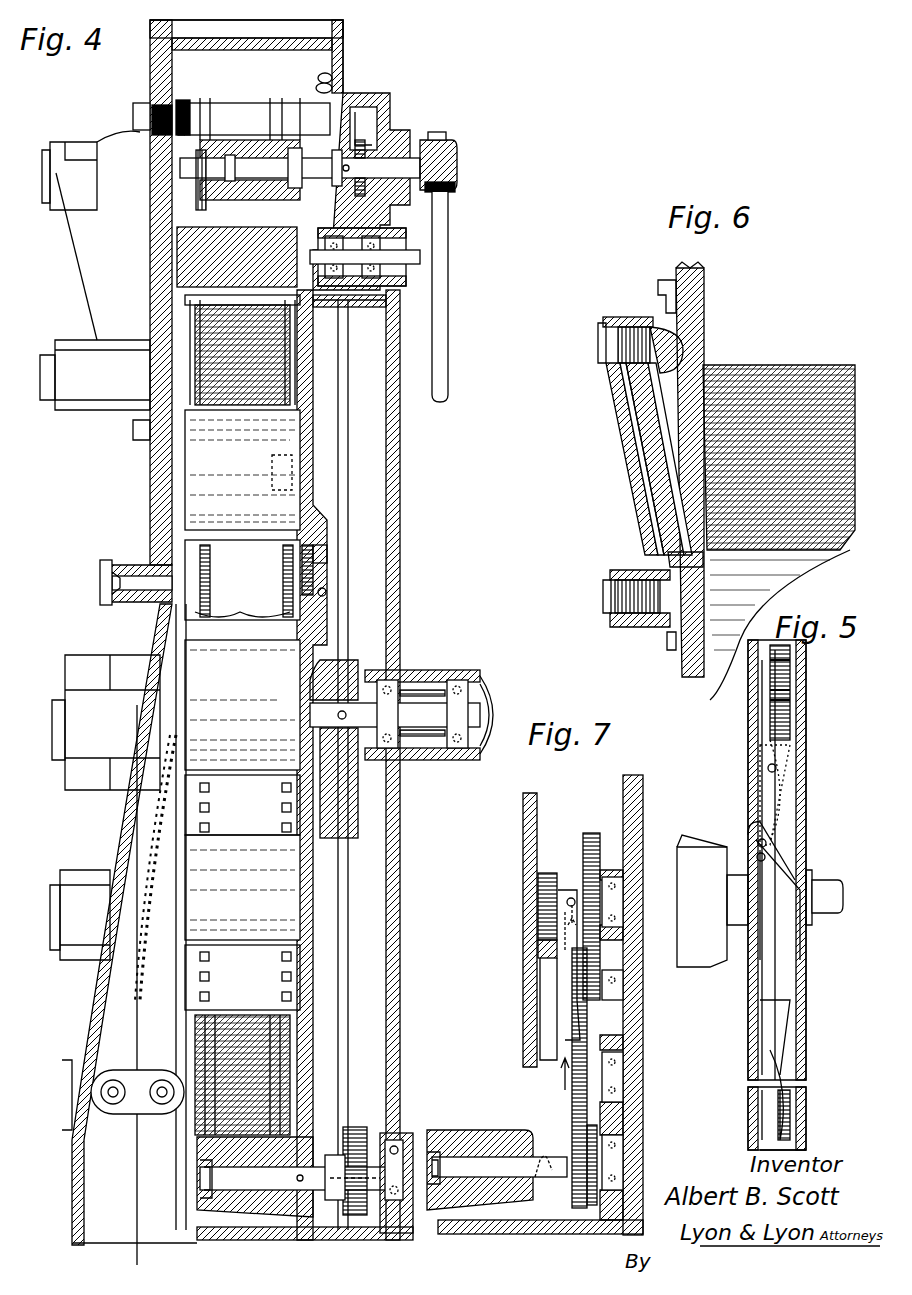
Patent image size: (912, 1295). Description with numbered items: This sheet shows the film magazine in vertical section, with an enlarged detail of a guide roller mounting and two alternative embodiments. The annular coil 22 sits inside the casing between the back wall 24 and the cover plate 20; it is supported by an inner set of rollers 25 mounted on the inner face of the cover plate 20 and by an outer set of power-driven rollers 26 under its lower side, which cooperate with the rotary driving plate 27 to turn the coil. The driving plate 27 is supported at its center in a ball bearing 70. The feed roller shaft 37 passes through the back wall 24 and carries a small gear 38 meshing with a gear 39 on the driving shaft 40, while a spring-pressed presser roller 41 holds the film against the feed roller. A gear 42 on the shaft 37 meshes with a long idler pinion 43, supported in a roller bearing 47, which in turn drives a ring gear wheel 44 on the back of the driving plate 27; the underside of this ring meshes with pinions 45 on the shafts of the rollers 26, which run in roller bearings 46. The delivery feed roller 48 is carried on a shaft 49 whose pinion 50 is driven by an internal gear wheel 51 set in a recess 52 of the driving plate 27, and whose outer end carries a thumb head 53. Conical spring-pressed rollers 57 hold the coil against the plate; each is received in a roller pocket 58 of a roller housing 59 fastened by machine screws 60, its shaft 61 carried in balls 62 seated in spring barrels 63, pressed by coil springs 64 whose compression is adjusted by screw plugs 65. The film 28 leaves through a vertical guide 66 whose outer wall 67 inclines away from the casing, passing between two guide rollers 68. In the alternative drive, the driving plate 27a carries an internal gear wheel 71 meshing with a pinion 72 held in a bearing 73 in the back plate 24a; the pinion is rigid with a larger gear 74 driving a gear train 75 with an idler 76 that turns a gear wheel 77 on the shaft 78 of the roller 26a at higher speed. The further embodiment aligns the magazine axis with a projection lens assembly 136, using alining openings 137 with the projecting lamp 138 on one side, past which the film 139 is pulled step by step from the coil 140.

In FIG. 4, the cover plate 20 is at (246, 292).
In FIG. 6, the cover plate 20 is at (690, 292).
In FIG. 4, the coil 22 is at (208, 340).
In FIG. 6, the coil 22 is at (805, 372).
In FIG. 4, the back wall 24 is at (402, 550).
In FIG. 7, the back plate 24a is at (632, 794).
In FIG. 4, the rollers 25 is at (285, 432).
In FIG. 4, the rollers 26 is at (252, 1195).
In FIG. 7, the roller 26a is at (470, 1138).
In FIG. 4, the driving plate 27 is at (325, 884).
In FIG. 7, the driving plate 27a is at (538, 928).
In FIG. 4, the film 28 is at (137, 975).
In FIG. 4, the shaft 37 is at (213, 173).
In FIG. 4, the pinion or small gear 38 is at (457, 150).
In FIG. 4, the gear 39 is at (456, 188).
In FIG. 4, the driving shaft 40 is at (448, 273).
In FIG. 4, the presser roller 41 is at (246, 101).
In FIG. 4, the gear 42 is at (368, 120).
In FIG. 4, the long pinion 43 is at (370, 235).
In FIG. 4, the gear wheel 44 is at (350, 313).
In FIG. 4, the pinions 45 is at (355, 1215).
In FIG. 4, the roller bearings 46 is at (398, 1150).
In FIG. 4, the roller bearing 47 is at (332, 1190).
In FIG. 4, the delivery feed roller 48 is at (255, 602).
In FIG. 4, the shaft 49 is at (148, 575).
In FIG. 4, the pinion 50 is at (315, 572).
In FIG. 4, the internal gear wheel 51 is at (328, 548).
In FIG. 4, the recess 52 is at (326, 594).
In FIG. 4, the thumb head 53 is at (104, 578).
In FIG. 6, the spring pressed rollers 57 is at (644, 414).
In FIG. 6, the roller pocket 58 is at (638, 440).
In FIG. 4, the roller housing 59 is at (78, 262).
In FIG. 6, the roller housing 59 is at (636, 470).
In FIG. 4, the machine screws 60 is at (134, 112).
In FIG. 6, the machine screws 60 is at (662, 282).
In FIG. 6, the shaft 61 is at (676, 488).
In FIG. 6, the ball 62 is at (675, 345).
In FIG. 4, the spring barrel 63 is at (70, 142).
In FIG. 6, the spring barrel 63 is at (610, 317).
In FIG. 6, the coil spring 64 is at (634, 327).
In FIG. 4, the screw plug 65 is at (42, 168).
In FIG. 6, the screw plug 65 is at (598, 336).
In FIG. 4, the guide 66 is at (72, 1140).
In FIG. 4, the outer wall 67 is at (128, 840).
In FIG. 4, the guide rollers 68 is at (100, 1062).
In FIG. 4, the ball bearing 70 is at (452, 690).
In FIG. 7, the internal gear wheel 71 is at (538, 955).
In FIG. 7, the pinion 72 is at (544, 873).
In FIG. 7, the bearing 73 is at (615, 895).
In FIG. 7, the gear 74 is at (592, 833).
In FIG. 7, the gear train 75 is at (605, 998).
In FIG. 7, the idler 76 is at (572, 1096).
In FIG. 7, the gear wheel 77 is at (576, 1128).
In FIG. 7, the shaft 78 is at (508, 1160).
In FIG. 5, the projection lens assembly 136 is at (830, 880).
In FIG. 5, the alining openings 137 is at (765, 890).
In FIG. 5, the projecting lamp 138 is at (708, 848).
In FIG. 5, the film 139 is at (785, 756).
In FIG. 5, the coil 140 is at (792, 715).